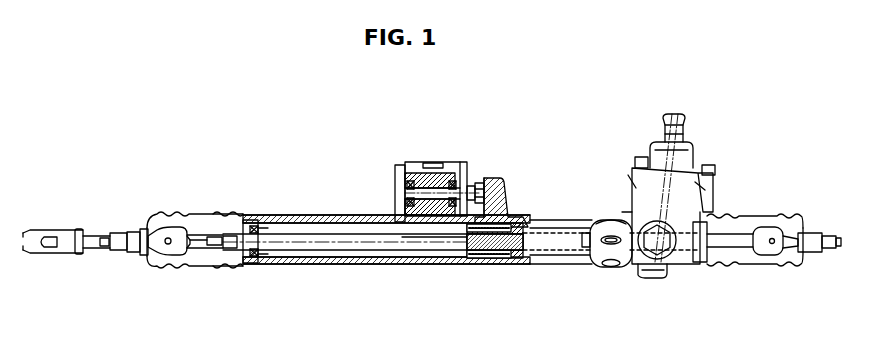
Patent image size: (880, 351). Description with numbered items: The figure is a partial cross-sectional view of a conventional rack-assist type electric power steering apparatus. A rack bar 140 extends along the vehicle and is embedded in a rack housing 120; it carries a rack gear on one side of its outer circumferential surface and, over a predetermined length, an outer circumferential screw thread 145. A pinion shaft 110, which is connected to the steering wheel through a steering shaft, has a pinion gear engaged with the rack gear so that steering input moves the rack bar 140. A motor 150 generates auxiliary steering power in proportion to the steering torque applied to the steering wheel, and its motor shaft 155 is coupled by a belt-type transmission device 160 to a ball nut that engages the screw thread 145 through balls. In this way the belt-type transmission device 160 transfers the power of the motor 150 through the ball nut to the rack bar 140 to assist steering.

The pinion shaft 110 is at (668, 114).
The rack housing 120 is at (349, 263).
The rack bar 140 is at (306, 250).
The outer circumferential screw thread 145 is at (440, 252).
The motor 150 is at (425, 162).
The motor shaft 155 is at (484, 177).
The belt-type transmission device 160 is at (510, 168).